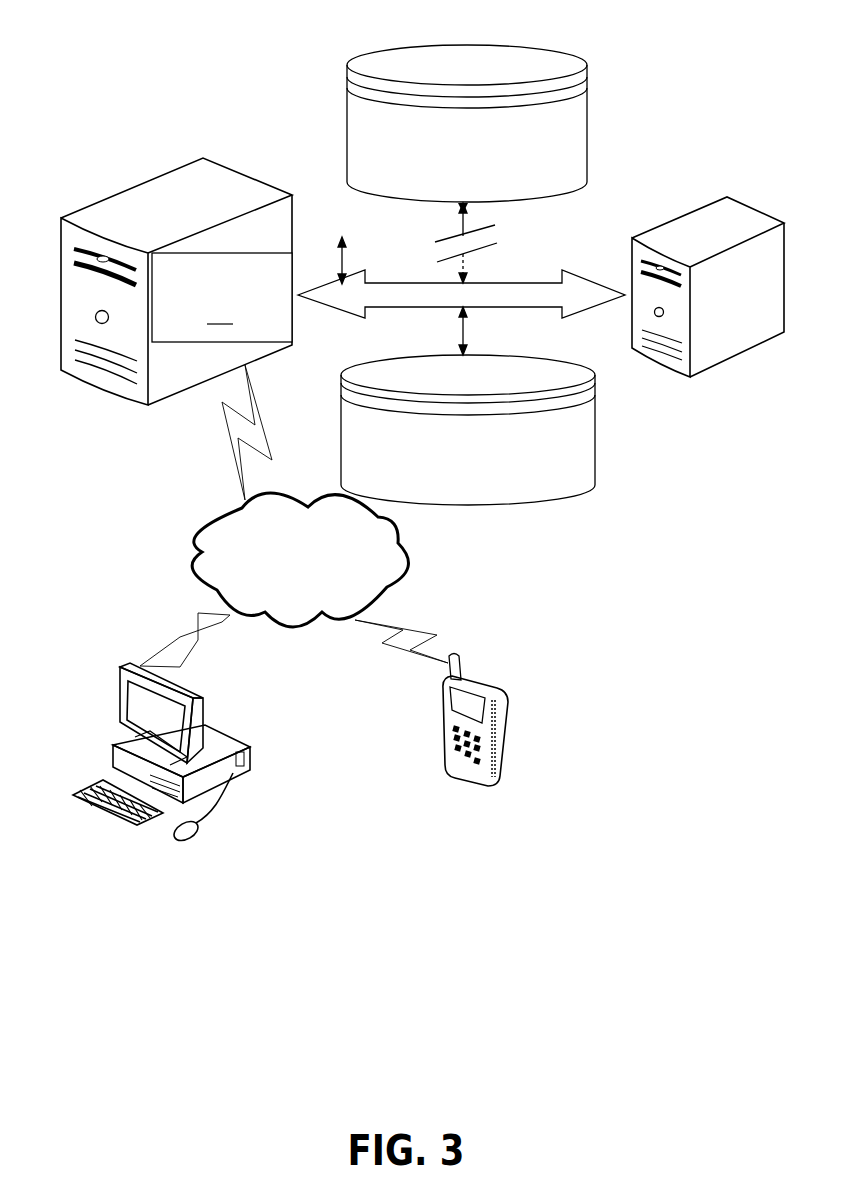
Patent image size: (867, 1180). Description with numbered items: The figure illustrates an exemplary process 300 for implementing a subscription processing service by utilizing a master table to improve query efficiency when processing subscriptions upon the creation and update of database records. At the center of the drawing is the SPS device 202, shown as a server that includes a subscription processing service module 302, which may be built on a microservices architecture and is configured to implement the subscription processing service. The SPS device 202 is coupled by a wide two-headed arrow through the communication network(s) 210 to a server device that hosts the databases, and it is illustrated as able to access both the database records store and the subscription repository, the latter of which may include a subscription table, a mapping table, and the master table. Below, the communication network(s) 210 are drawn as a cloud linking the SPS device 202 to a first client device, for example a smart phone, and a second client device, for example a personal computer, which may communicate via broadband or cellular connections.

The exemplary process 300 is at (254, 74).
The SPS device 202 is at (108, 197).
The subscription processing service module 302 is at (222, 297).
The communication network(s) 210 is at (382, 435).